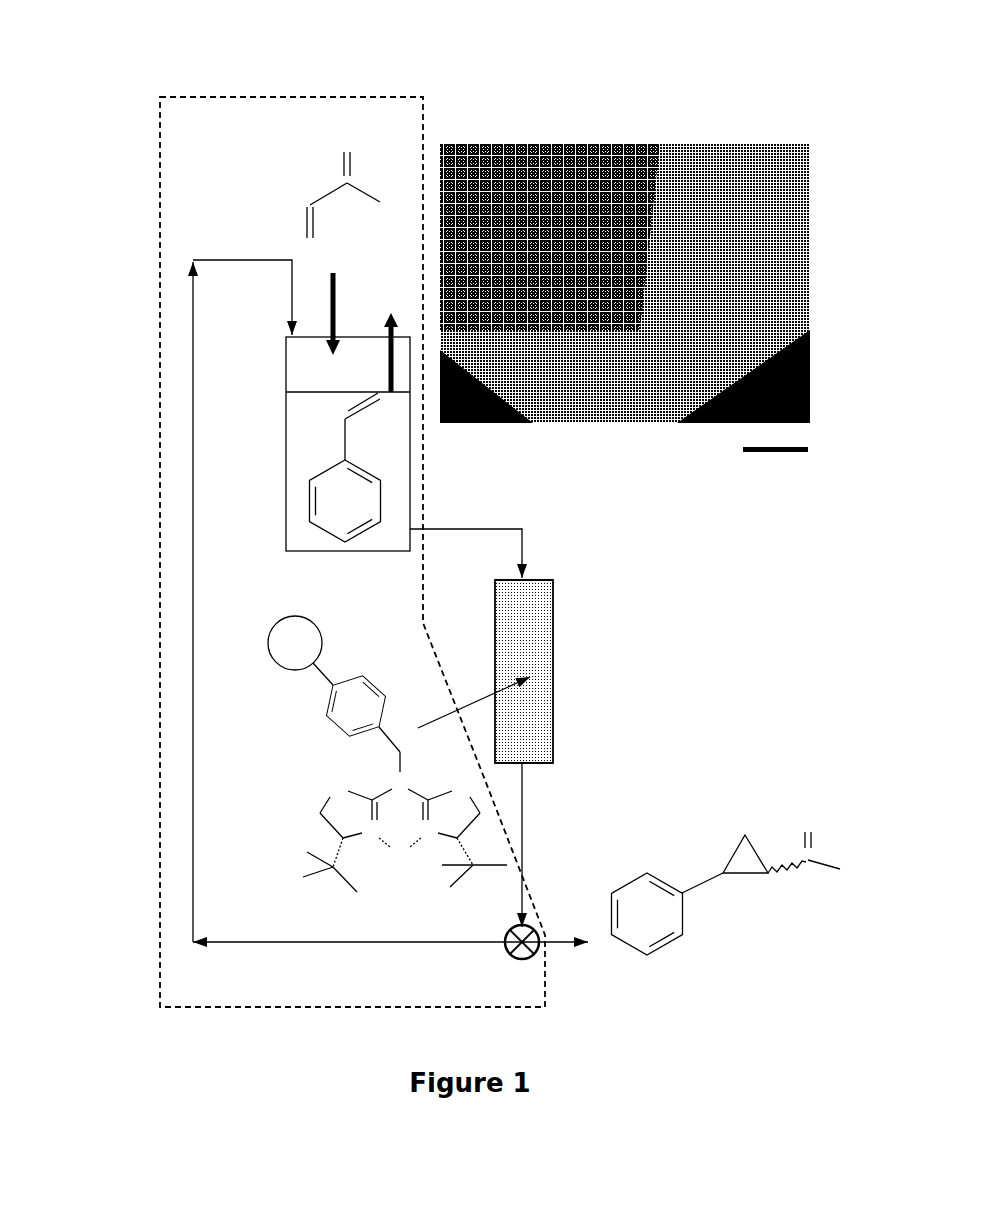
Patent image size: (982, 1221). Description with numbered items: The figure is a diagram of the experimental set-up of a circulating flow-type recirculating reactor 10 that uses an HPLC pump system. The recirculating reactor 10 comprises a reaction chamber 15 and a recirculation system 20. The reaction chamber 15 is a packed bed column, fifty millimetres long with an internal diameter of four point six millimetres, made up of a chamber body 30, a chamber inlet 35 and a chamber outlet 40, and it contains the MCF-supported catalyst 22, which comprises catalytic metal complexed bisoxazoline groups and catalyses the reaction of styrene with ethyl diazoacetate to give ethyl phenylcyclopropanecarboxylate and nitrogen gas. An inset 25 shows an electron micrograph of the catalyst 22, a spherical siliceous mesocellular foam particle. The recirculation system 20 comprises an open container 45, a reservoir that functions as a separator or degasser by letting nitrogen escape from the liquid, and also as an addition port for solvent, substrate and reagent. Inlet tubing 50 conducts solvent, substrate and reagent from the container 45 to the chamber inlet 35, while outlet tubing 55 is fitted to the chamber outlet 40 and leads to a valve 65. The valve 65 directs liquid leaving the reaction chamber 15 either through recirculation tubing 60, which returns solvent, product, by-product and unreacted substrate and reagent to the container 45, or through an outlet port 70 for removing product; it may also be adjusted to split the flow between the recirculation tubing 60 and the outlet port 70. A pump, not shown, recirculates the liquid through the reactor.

The recirculating reactor 10 is at (98, 67).
The reaction chamber 15 is at (647, 625).
The recirculation system 20 is at (157, 643).
The MCF-supported catalyst 22 is at (399, 755).
The inset 25 is at (812, 272).
The chamber body 30 is at (553, 718).
The chamber inlet 35 is at (532, 570).
The chamber outlet 40 is at (525, 763).
The open container 45 is at (287, 363).
The inlet tubing 50 is at (482, 532).
The outlet tubing 55 is at (523, 822).
The recirculation tubing 60 is at (263, 935).
The valve 65 is at (512, 953).
The outlet port 70 is at (585, 960).